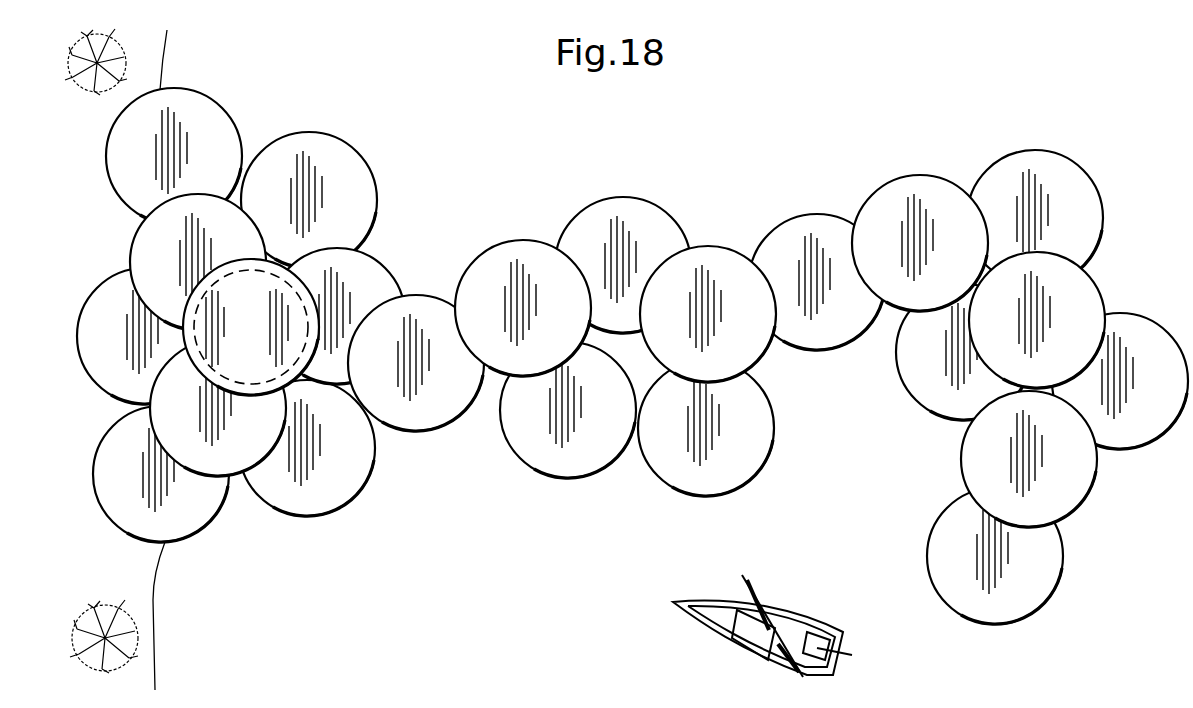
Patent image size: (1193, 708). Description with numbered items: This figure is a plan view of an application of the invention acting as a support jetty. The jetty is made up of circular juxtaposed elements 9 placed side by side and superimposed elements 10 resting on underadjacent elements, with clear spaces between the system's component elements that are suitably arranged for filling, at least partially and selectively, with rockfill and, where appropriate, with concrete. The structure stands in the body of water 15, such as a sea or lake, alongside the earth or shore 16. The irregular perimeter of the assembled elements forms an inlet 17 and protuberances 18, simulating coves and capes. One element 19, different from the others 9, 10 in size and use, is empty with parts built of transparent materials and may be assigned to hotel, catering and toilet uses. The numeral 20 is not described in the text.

The juxtaposed elements 9 is at (627, 212).
The superimposed elements 10 is at (417, 413).
The body of water 15 is at (1147, 117).
The earth, shore 16 is at (83, 414).
The inlet 17 is at (858, 370).
The protuberances 18 is at (1130, 427).
The element different in size and use 19 is at (258, 339).
The shore 20 is at (162, 57).